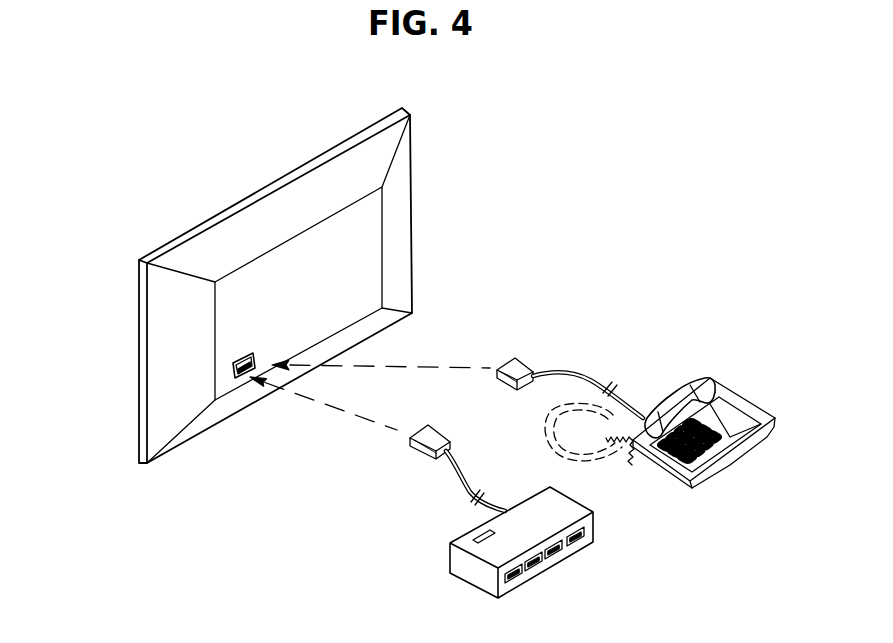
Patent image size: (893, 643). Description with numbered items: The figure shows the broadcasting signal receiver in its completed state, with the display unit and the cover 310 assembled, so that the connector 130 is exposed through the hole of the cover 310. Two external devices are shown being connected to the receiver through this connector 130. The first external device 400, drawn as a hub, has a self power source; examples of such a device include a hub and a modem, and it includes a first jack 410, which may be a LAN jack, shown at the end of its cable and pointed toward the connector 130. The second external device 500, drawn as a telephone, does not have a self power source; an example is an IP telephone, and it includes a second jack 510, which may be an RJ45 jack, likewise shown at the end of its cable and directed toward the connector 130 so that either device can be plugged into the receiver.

The cover 310 is at (400, 190).
The connector 130 is at (233, 367).
The second jack 510 is at (518, 368).
The second external device 500 is at (735, 408).
The first jack 410 is at (415, 448).
The first external device 400 is at (457, 562).